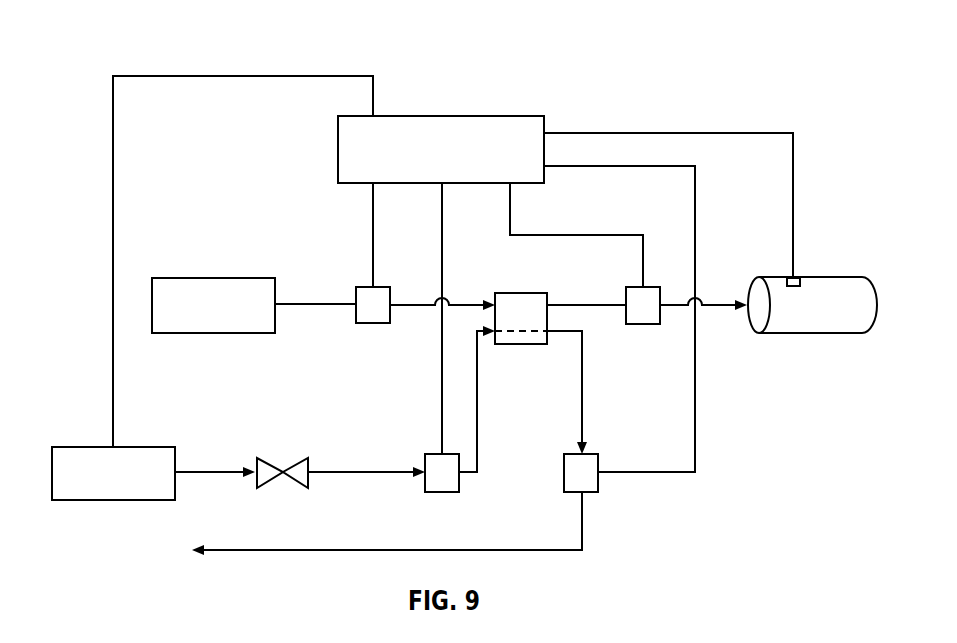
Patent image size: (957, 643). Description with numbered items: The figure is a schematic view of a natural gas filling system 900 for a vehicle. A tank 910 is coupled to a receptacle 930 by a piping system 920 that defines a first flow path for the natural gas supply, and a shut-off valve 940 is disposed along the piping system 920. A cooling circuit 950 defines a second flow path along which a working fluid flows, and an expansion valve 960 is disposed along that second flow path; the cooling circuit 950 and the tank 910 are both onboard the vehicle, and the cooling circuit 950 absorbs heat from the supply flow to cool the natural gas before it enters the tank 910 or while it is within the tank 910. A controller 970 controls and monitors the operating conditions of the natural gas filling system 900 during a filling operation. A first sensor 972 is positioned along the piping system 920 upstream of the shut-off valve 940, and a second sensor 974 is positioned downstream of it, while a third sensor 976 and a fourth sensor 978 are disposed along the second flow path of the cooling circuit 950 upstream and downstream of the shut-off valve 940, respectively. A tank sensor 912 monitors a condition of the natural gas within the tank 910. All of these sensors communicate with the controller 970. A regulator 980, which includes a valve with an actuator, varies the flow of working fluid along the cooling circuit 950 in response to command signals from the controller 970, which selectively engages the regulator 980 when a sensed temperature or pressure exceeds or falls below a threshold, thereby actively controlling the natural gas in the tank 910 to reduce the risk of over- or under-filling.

The natural gas filling system 900 is at (804, 34).
The tank 910 is at (838, 320).
The tank sensor 912 is at (801, 283).
The piping system 920 is at (320, 308).
The receptacle 930 is at (233, 318).
The shut-off valve 940 is at (520, 293).
The cooling circuit 950 is at (602, 517).
The expansion valve 960 is at (298, 463).
The controller 970 is at (498, 116).
The first sensor 972 is at (357, 287).
The second sensor 974 is at (633, 287).
The third sensor 976 is at (428, 454).
The fourth sensor 978 is at (568, 454).
The regulator 980 is at (134, 486).